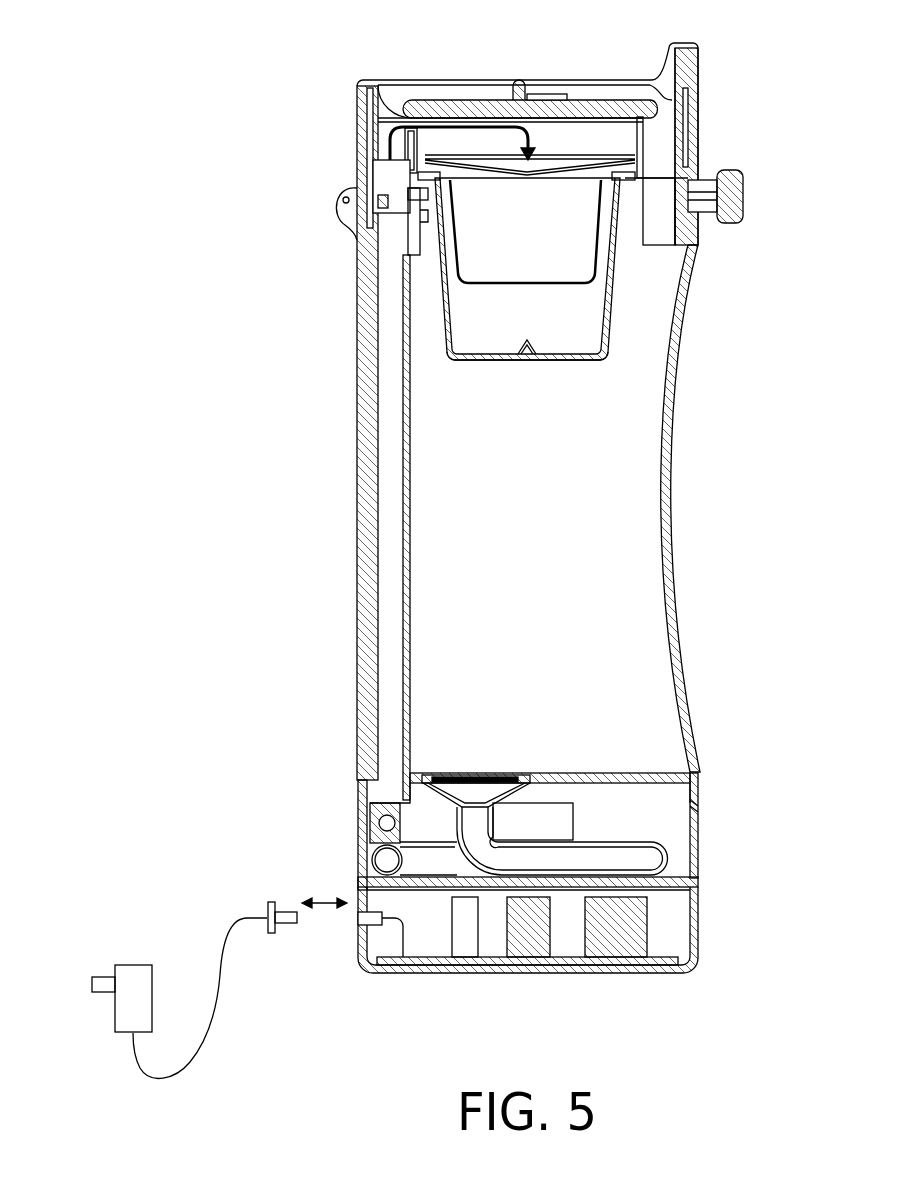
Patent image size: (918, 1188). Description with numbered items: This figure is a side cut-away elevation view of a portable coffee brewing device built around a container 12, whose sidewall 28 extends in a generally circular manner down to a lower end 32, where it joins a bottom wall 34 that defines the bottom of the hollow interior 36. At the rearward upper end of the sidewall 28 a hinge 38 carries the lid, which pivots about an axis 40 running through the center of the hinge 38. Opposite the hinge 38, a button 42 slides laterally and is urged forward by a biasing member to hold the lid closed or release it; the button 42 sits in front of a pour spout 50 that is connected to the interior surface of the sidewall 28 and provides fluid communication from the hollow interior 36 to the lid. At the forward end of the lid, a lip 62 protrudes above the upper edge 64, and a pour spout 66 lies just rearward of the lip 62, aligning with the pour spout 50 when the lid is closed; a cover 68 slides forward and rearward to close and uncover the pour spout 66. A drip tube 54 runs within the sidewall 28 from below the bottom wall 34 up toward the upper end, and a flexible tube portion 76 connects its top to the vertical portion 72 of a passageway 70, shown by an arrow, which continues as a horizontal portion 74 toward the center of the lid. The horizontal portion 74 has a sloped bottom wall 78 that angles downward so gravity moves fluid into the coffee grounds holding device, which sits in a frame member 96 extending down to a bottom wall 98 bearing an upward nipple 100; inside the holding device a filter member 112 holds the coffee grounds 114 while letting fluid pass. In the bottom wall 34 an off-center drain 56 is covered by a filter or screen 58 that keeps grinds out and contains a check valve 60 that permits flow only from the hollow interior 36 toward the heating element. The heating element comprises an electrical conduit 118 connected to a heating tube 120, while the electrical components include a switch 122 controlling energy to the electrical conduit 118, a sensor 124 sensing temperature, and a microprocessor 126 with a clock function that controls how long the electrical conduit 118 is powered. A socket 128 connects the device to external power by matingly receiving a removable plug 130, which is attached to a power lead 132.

The container 12 is at (688, 397).
The sidewall 28 is at (673, 470).
The lower end 32 is at (700, 807).
The bottom wall 34 is at (620, 778).
The hollow interior 36 is at (547, 532).
The hinge 38 is at (343, 200).
The axis 40 is at (345, 208).
The button 42 is at (745, 200).
The pour spout 50 is at (655, 245).
The drip tube 54 is at (390, 533).
The drain 56 is at (450, 762).
The filter or screen 58 is at (503, 778).
The check valve 60 is at (475, 805).
The lip 62 is at (700, 48).
The upper edge 64 is at (370, 79).
The pour spout 66 is at (658, 100).
The cover 68 is at (522, 82).
The passageway 70 is at (463, 130).
The vertical portion 72 is at (387, 138).
The horizontal portion 74 is at (570, 130).
The flexible tube portion 76 is at (378, 180).
The sloped bottom wall 78 is at (600, 153).
The frame member 96 is at (417, 278).
The bottom wall 98 is at (462, 365).
The nipple 100 is at (513, 365).
The filter member 112 is at (480, 292).
The coffee grounds 114 is at (545, 259).
The electrical conduit 118 is at (380, 822).
The heating tube 120 is at (383, 858).
The switch 122 is at (463, 905).
The sensor 124 is at (527, 905).
The microprocessor 126 is at (612, 905).
The socket 128 is at (360, 918).
The plug 130 is at (271, 901).
The power lead 132 is at (220, 968).